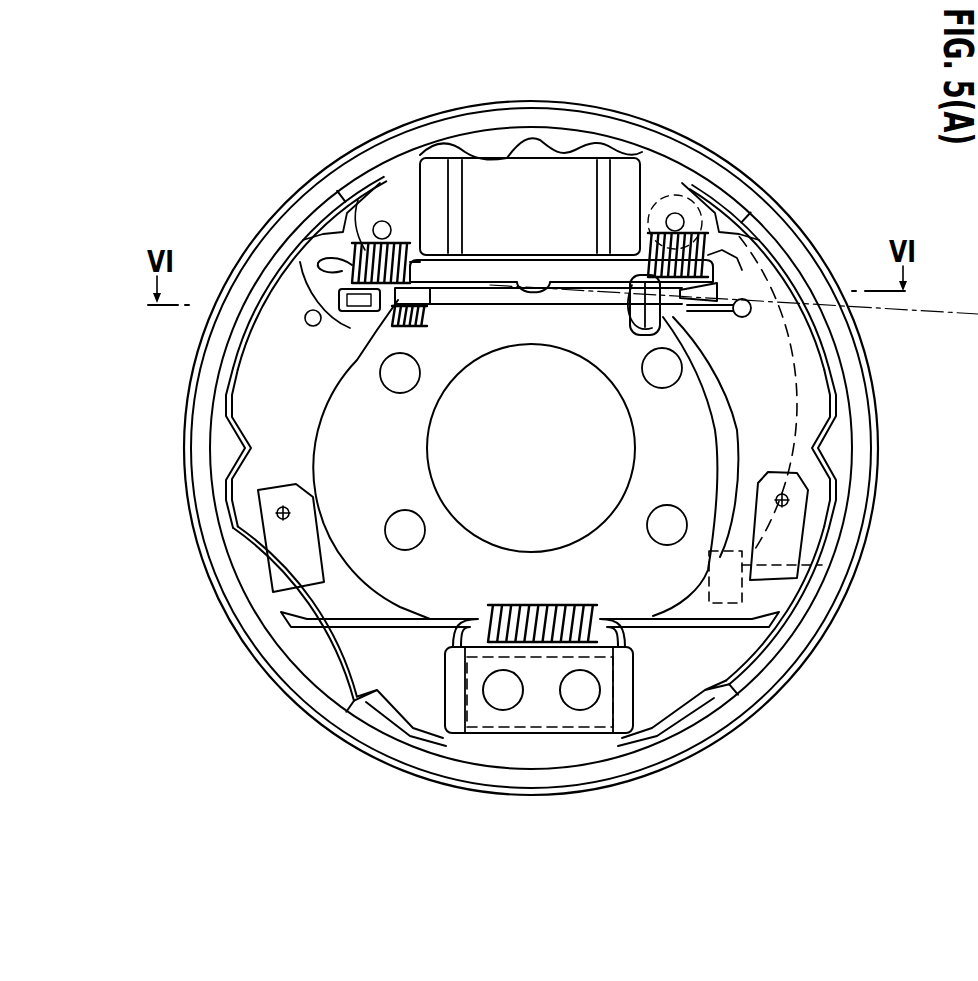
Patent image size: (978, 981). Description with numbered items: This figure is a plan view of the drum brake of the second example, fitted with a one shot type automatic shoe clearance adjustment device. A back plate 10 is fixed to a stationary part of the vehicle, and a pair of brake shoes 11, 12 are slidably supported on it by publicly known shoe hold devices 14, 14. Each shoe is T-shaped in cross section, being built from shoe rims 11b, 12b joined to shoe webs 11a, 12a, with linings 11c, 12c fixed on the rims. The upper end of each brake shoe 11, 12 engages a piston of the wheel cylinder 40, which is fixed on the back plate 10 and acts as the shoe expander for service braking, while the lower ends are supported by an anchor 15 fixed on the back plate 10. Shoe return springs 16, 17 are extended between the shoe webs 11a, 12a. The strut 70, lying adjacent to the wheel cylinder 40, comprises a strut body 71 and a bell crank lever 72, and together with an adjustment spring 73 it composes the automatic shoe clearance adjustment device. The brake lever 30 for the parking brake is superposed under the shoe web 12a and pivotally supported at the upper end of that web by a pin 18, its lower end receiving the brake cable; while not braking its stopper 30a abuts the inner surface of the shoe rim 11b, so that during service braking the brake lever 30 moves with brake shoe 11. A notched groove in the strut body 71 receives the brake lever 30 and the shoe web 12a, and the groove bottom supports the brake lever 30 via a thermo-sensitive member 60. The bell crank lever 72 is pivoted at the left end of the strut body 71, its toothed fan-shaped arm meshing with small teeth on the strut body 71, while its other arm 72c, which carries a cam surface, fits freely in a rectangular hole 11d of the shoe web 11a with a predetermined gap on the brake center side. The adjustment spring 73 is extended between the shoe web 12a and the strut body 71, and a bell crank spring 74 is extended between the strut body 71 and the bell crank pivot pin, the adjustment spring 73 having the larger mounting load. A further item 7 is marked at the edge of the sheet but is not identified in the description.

The backing plate 7 is at (734, 273).
The back plate 10 is at (778, 195).
The brake shoe 11 is at (255, 283).
The shoe web 11a is at (305, 668).
The shoe rim 11b is at (318, 690).
The lining 11c is at (335, 697).
The rectangular hole 11d is at (313, 234).
The brake shoe 12 is at (812, 286).
The shoe web 12a is at (778, 642).
The shoe rim 12b is at (783, 690).
The lining 12c is at (763, 716).
The shoe hold device 14 is at (250, 538).
The anchor 15 is at (562, 742).
The shoe return spring 16 is at (367, 243).
The shoe return spring 17 is at (567, 605).
The pin 18 is at (677, 218).
The brake lever 30 is at (738, 436).
The stopper 30a is at (840, 566).
The wheel cylinder 40 is at (537, 132).
The thermo-sensitive member 60 is at (648, 332).
The strut 70 is at (503, 312).
The strut body 71 is at (560, 298).
The bell crank lever 72 is at (428, 303).
The arm 72c is at (300, 244).
The adjustment spring 73 is at (683, 313).
The bell crank spring 74 is at (403, 322).